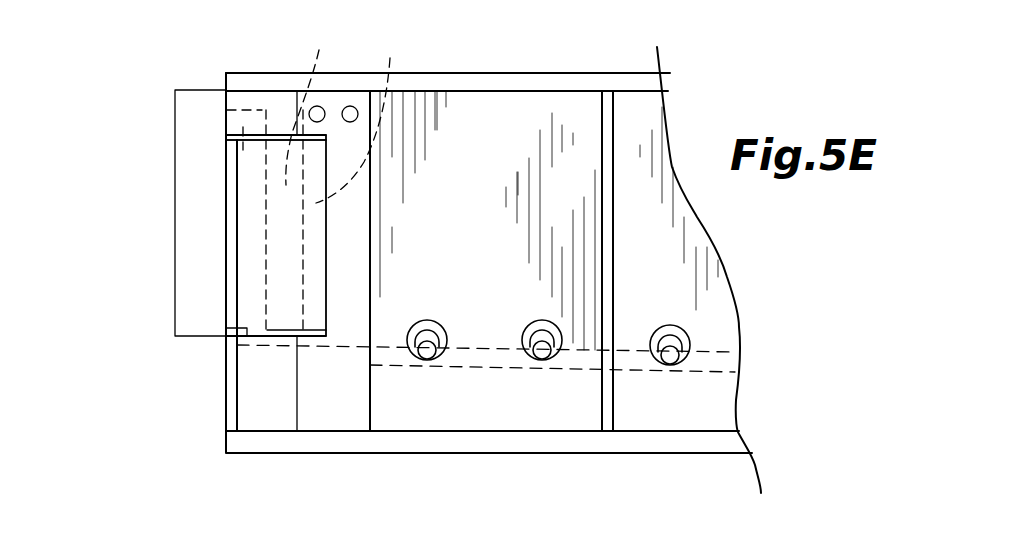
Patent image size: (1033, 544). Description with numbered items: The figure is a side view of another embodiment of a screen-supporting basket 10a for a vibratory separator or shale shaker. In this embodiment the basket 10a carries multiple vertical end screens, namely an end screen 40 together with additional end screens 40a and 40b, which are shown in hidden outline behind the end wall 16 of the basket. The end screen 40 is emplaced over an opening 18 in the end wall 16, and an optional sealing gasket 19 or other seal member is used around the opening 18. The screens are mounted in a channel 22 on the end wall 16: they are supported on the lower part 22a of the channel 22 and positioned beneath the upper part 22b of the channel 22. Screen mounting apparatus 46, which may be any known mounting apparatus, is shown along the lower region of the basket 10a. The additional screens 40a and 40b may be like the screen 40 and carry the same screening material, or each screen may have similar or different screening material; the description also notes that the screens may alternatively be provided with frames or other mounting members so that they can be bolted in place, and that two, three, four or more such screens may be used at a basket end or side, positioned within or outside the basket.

The basket 10a is at (518, 65).
The end wall 16 is at (225, 406).
The opening 18 is at (237, 196).
The sealing gasket 19 is at (232, 327).
The channel 22 is at (197, 233).
The lower part of channel 22a is at (283, 334).
The upper part of channel 22b is at (241, 134).
The end screen 40 is at (252, 185).
The end screen 40a is at (315, 104).
The end screen 40b is at (365, 116).
The screen mounting apparatus 46 is at (541, 359).